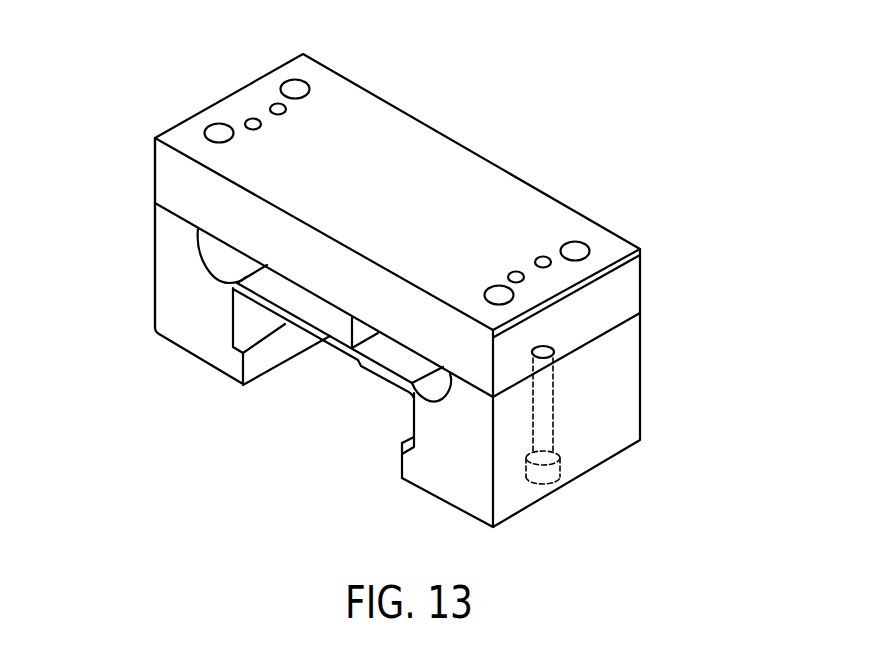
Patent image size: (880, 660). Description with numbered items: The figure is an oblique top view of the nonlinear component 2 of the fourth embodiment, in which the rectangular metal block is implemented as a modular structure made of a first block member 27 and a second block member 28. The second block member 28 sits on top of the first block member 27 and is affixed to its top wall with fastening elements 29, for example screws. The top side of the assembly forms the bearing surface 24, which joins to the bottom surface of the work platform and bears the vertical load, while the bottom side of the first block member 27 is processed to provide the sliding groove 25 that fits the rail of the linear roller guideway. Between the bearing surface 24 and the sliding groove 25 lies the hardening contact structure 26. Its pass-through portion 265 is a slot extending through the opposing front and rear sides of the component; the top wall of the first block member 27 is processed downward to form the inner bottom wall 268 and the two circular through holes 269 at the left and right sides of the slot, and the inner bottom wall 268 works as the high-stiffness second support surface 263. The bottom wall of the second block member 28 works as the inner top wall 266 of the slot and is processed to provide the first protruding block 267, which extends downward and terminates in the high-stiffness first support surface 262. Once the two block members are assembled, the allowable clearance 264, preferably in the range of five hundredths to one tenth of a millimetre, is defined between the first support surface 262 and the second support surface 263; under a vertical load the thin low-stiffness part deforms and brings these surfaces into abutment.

The nonlinear component 2 is at (650, 366).
The bearing surface 24 is at (572, 232).
The sliding groove 25 is at (347, 397).
The hardening contact structure 26 is at (390, 327).
The first block member 27 is at (182, 293).
The second block member 28 is at (173, 187).
The fastening elements 29 is at (553, 442).
The high-stiffness first support surface 262 is at (322, 317).
The high-stiffness second support surface 263 is at (278, 295).
The allowable clearance 264 is at (295, 335).
The pass-through portion 265 is at (247, 263).
The inner top wall 266 is at (388, 375).
The first protruding block 267 is at (307, 313).
The inner bottom wall 268 is at (232, 303).
The through holes 269 is at (210, 245).